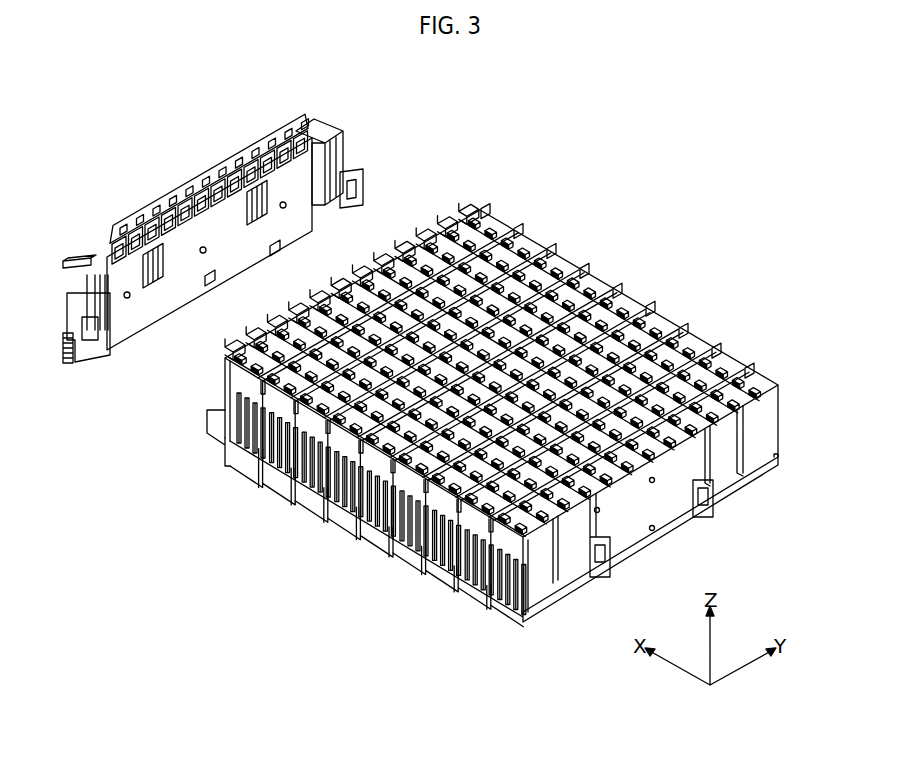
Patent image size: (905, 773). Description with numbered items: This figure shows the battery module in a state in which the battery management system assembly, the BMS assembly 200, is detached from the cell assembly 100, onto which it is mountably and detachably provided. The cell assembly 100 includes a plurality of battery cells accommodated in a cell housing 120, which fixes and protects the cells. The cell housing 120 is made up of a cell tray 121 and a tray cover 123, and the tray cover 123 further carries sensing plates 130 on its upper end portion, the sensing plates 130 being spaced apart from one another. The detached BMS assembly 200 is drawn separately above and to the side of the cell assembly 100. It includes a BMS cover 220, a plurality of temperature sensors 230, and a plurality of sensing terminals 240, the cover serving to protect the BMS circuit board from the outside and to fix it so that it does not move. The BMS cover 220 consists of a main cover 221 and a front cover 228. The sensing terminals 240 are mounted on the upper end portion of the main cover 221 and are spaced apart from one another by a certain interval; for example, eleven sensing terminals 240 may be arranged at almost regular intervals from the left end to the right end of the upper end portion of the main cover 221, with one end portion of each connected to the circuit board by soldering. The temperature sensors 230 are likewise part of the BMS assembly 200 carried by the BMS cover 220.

The cell assembly 100 is at (541, 414).
The cell housing 120 is at (699, 509).
The cell tray 121 is at (773, 470).
The tray cover 123 is at (778, 433).
The sensing plate 130 is at (651, 313).
The BMS assembly 200 is at (199, 220).
The BMS cover 220 is at (82, 264).
The main cover 221 is at (300, 180).
The front cover 228 is at (207, 180).
The temperature sensor 230 is at (263, 205).
The sensing terminal 240 is at (280, 140).